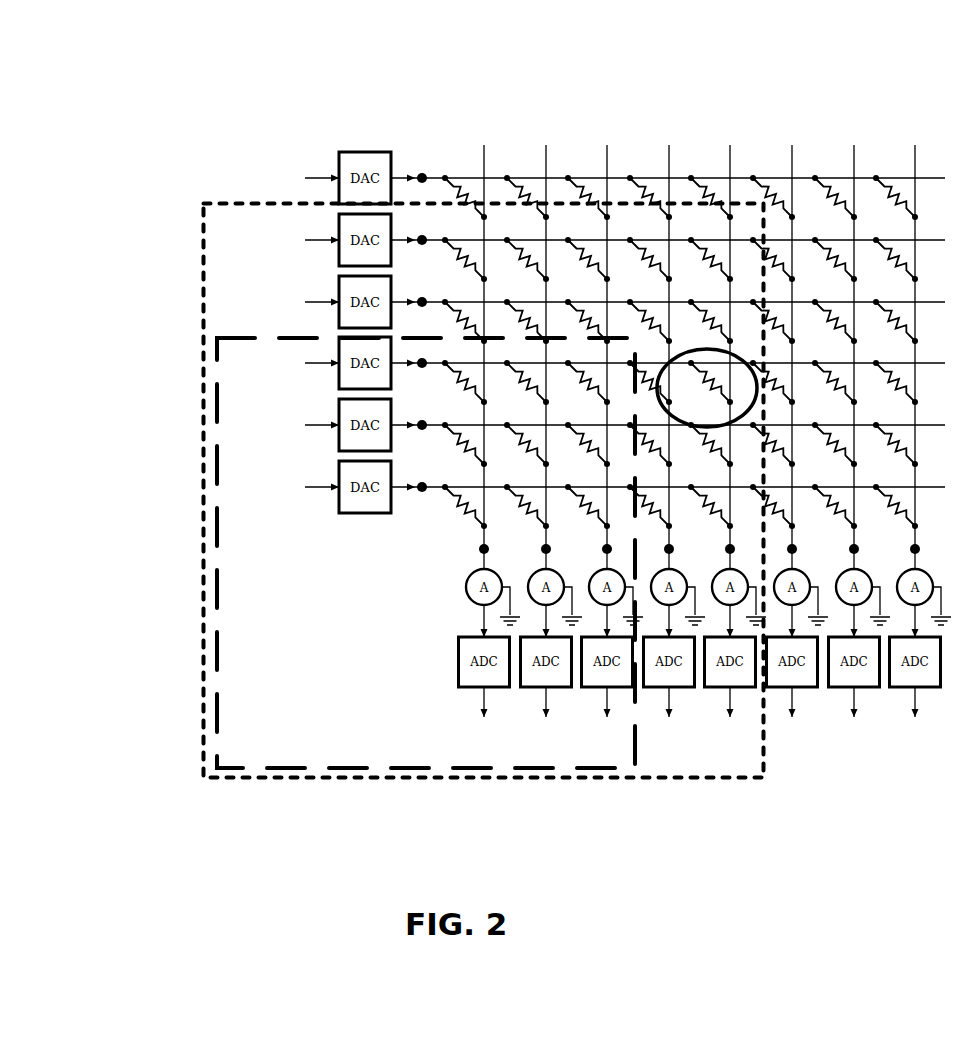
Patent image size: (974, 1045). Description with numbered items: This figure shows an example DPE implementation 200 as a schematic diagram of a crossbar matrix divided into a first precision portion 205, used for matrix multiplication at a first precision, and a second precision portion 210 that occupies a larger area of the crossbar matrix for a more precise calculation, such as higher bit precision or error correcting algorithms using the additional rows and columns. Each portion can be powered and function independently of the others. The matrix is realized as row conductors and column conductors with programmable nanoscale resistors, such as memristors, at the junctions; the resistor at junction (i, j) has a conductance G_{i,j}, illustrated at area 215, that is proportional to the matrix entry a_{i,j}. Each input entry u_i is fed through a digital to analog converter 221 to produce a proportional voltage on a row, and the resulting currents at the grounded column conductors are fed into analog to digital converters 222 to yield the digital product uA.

The DPE implementation 200 is at (594, 385).
The first precision portion 205 is at (237, 337).
The second precision portion 210 is at (200, 243).
The area of conductance G_{i,j} 215 is at (740, 350).
The digital to analog converters (DAC) 221 is at (354, 543).
The analog to digital converters (ADCs) 222 is at (432, 662).